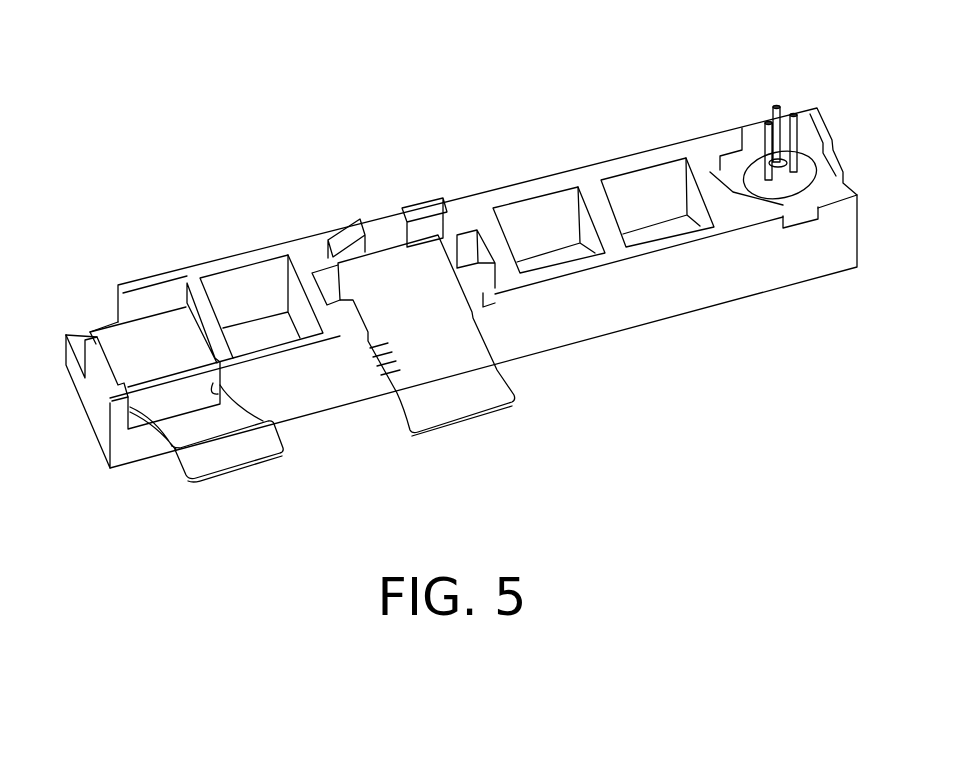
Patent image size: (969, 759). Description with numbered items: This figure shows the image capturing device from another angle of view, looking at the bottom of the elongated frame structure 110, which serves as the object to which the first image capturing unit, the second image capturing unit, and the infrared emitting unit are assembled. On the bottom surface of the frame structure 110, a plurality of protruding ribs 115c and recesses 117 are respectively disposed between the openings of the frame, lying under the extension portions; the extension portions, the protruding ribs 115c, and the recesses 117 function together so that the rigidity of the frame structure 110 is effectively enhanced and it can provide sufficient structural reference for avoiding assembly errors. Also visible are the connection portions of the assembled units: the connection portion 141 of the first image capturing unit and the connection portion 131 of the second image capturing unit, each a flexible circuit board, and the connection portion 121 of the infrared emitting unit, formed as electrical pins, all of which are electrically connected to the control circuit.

The frame structure 110 is at (780, 267).
The protruding ribs 115c is at (208, 306).
The recesses 117 is at (277, 286).
The connection portion 121 is at (803, 112).
The connection portion 131 is at (452, 403).
The connection portion 141 is at (243, 445).